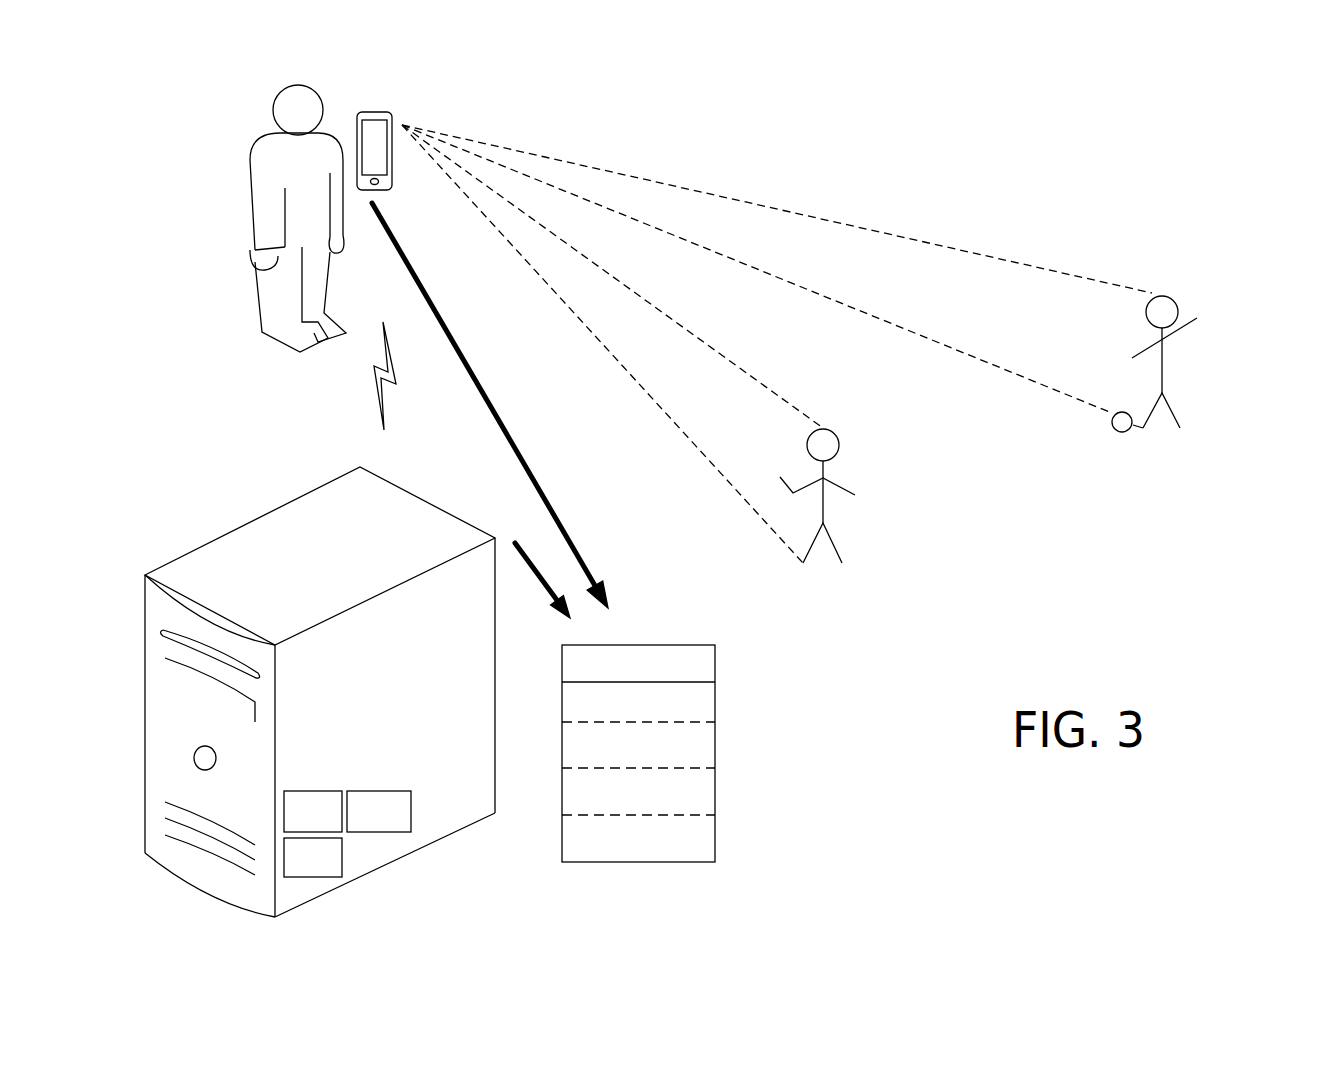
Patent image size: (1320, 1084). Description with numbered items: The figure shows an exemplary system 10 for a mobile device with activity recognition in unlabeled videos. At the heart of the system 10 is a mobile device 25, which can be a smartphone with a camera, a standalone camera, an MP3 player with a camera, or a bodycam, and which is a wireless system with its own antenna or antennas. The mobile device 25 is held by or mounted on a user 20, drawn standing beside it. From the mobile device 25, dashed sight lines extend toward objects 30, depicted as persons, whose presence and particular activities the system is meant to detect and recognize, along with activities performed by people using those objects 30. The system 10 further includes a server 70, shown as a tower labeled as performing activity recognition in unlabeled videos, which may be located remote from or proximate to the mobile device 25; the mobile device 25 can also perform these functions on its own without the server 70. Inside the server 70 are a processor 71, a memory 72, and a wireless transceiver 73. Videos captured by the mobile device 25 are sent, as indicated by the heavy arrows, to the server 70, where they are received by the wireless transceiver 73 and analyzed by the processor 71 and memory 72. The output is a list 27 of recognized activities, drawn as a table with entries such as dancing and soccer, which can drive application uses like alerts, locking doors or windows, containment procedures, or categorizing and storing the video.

The system 10 is at (1077, 103).
The user 20 is at (243, 106).
The mobile device 25 is at (409, 202).
The list of recognized activities 27 is at (741, 748).
The objects 30 is at (841, 412).
The server 70 is at (317, 593).
The processor 71 is at (330, 826).
The memory 72 is at (396, 826).
The wireless transceiver 73 is at (330, 872).